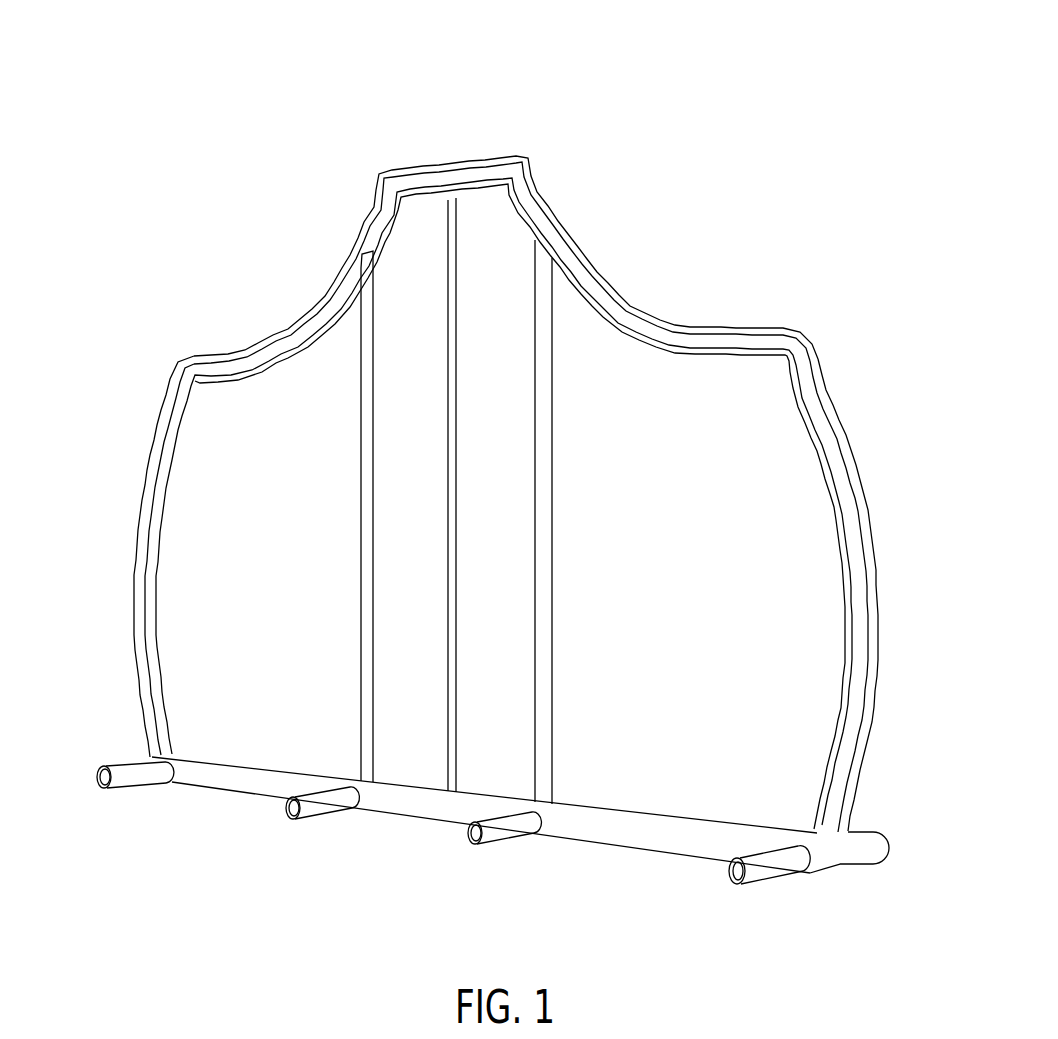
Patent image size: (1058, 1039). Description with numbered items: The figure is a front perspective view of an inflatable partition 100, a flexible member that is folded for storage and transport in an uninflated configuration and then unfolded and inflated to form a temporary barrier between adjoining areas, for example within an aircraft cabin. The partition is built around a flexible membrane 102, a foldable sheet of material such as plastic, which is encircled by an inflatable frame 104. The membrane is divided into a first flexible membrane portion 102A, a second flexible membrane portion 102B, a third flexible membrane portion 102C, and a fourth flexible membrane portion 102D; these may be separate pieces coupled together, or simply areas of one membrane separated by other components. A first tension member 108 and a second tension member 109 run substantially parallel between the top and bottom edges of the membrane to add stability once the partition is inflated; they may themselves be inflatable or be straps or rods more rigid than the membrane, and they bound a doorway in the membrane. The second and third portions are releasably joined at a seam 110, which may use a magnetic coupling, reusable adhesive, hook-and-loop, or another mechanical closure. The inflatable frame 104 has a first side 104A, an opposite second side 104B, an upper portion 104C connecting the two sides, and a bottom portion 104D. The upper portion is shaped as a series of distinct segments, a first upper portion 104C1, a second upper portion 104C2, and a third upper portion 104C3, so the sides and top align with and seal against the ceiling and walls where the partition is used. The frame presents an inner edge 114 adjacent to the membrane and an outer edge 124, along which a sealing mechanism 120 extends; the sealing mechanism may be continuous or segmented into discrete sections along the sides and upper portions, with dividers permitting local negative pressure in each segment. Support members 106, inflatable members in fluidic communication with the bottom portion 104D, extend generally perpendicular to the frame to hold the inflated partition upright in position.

The inflatable partition 100 is at (232, 130).
The flexible membrane 102 is at (212, 460).
The first flexible membrane portion 102A is at (262, 417).
The second flexible membrane portion 102B is at (398, 362).
The third flexible membrane portion 102C is at (482, 218).
The fourth flexible membrane portion 102D is at (797, 525).
The inflatable frame 104 is at (720, 330).
The first side 104A is at (143, 513).
The second side 104B is at (860, 645).
The upper portion 104C is at (448, 183).
The first upper portion 104C1 is at (290, 323).
The second upper portion 104C2 is at (418, 190).
The third upper portion 104C3 is at (592, 273).
The bottom portion 104D is at (247, 782).
The support members 106 is at (123, 776).
The first tension member 108 is at (368, 653).
The second tension member 109 is at (543, 672).
The seam 110 is at (456, 498).
The inner edge 114 is at (830, 770).
The sealing mechanism 120 is at (131, 592).
The outer edge 124 is at (874, 594).